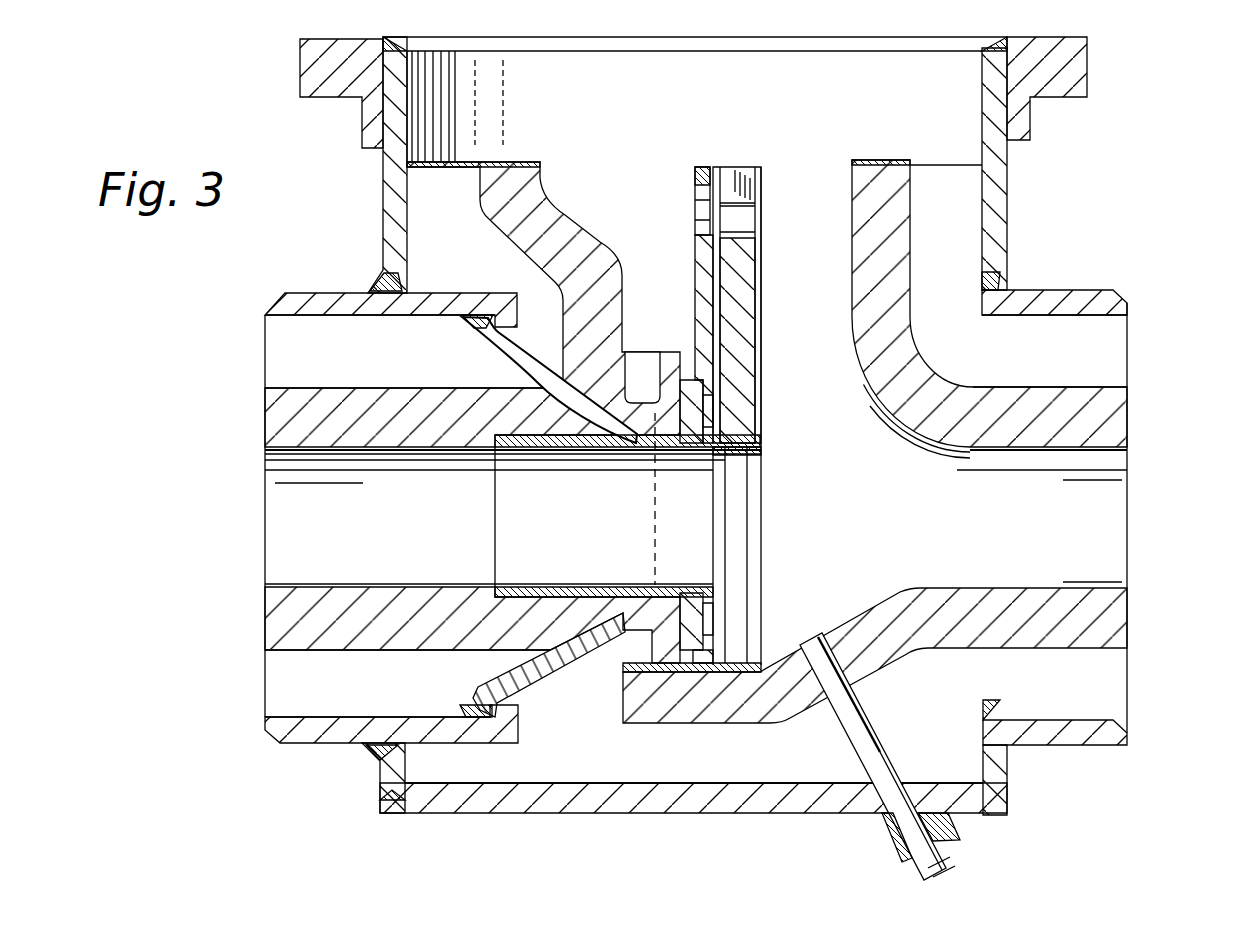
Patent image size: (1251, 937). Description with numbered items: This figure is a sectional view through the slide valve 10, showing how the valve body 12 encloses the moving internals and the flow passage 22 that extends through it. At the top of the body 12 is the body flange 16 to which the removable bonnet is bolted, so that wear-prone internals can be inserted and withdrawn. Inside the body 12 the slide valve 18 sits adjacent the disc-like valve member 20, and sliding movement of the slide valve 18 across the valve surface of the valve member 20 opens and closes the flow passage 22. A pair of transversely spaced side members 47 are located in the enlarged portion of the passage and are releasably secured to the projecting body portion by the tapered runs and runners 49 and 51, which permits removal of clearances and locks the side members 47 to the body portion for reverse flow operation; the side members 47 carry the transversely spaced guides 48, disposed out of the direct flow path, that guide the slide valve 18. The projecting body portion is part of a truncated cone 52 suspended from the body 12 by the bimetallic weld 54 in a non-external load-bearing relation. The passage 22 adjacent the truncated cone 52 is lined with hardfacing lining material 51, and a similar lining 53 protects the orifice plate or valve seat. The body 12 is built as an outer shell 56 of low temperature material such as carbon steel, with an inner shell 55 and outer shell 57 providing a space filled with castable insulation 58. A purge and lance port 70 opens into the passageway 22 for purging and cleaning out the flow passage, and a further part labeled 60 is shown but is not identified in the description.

The slide valve 10 is at (1013, 227).
The valve body 12 is at (1010, 182).
The body flange 16 is at (1057, 85).
The slide valve 18 is at (737, 330).
The valve member 20 is at (715, 465).
The flow passage 22 is at (414, 513).
The side members 47 is at (700, 263).
The guides 48 is at (737, 506).
The tapered runs and runners 49 is at (760, 295).
The lining material 51 is at (568, 447).
The truncated cone 52 is at (570, 647).
The lining 53 is at (692, 483).
The bimetallic weld 54 is at (476, 323).
The inner shell 55 is at (517, 313).
The outer shell 56 is at (643, 807).
The outer shell 57 is at (745, 800).
The insulation 58 is at (277, 347).
The liner 60 is at (290, 435).
The purge and lance port 70 is at (943, 852).